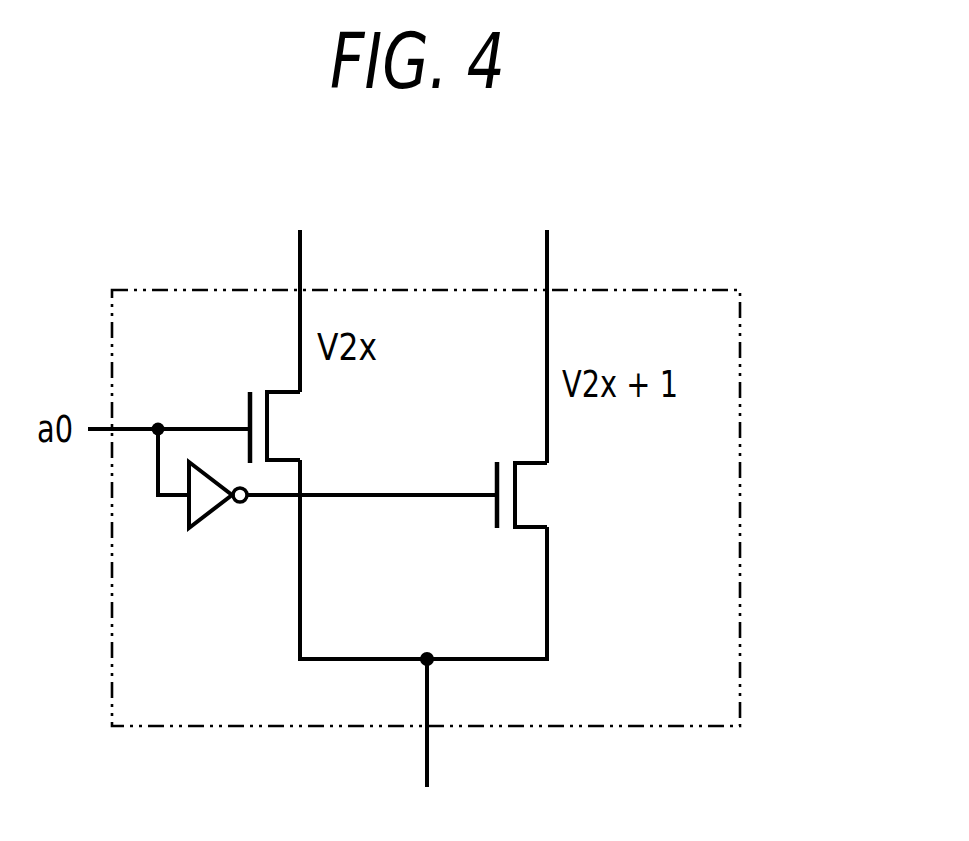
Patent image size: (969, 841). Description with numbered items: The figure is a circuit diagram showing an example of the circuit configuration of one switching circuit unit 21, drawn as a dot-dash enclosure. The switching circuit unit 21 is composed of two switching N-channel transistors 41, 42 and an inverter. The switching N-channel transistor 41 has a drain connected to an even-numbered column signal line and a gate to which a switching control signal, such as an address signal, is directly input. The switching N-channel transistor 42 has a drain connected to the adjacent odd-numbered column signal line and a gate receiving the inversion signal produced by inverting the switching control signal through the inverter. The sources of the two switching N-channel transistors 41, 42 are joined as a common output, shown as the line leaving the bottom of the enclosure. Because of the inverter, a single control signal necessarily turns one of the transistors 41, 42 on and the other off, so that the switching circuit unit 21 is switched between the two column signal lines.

The switching circuit unit 21 is at (743, 302).
The switching N-channel transistor 41 is at (280, 424).
The switching N-channel transistor 42 is at (542, 489).